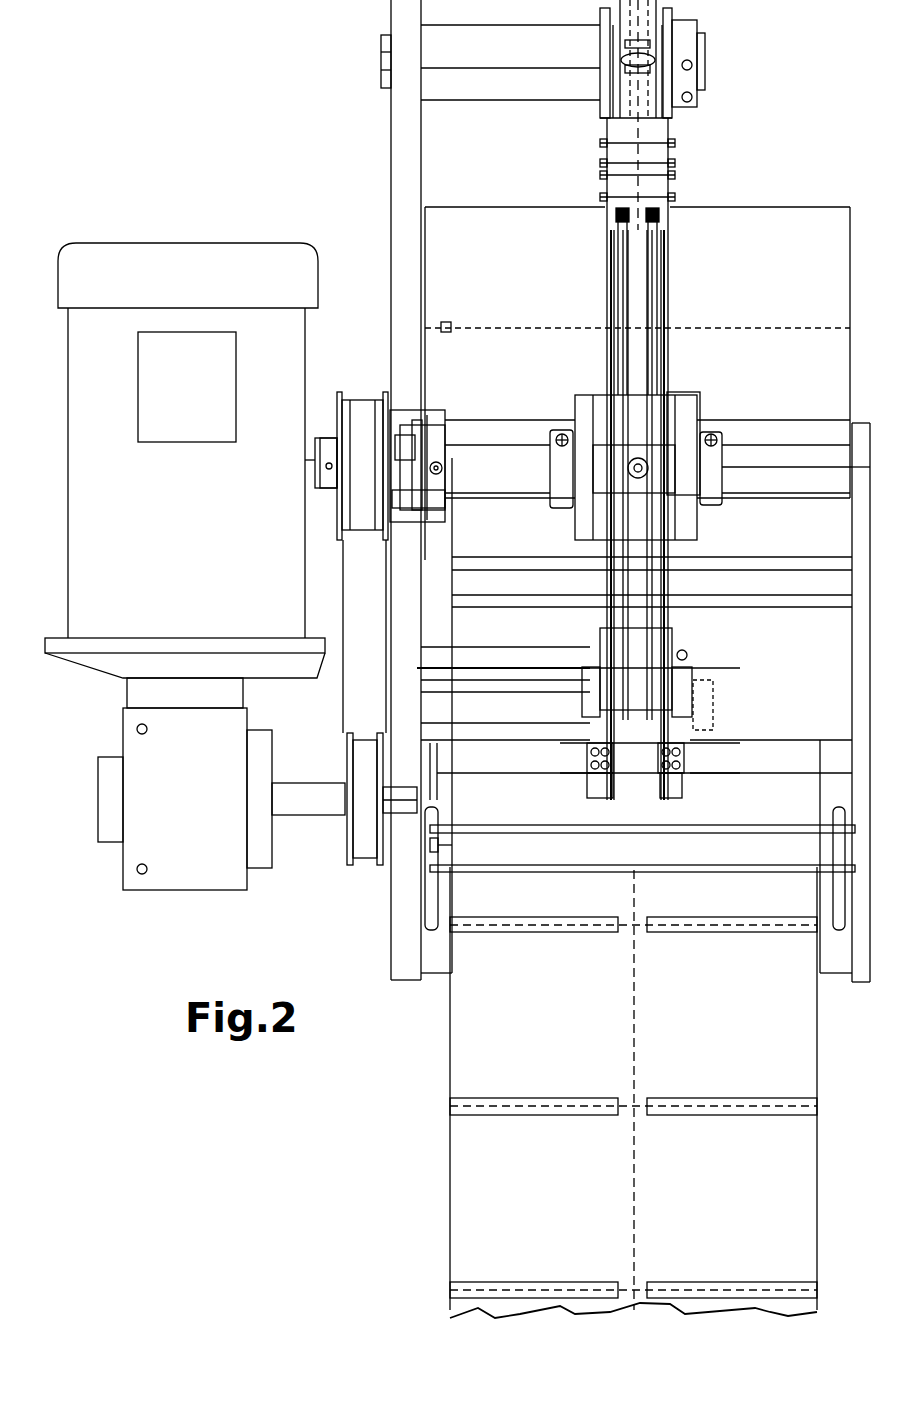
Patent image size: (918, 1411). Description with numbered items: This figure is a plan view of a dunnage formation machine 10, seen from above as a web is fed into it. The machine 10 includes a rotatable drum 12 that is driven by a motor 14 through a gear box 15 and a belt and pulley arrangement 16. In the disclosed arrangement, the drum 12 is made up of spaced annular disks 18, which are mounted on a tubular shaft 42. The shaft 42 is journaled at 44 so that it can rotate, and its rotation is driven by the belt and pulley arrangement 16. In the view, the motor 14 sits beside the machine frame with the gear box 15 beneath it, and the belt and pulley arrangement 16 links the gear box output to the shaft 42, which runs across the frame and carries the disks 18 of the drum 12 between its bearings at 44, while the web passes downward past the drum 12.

The dunnage formation machine 10 is at (360, 965).
The rotatable drum 12 is at (588, 291).
The motor 14 is at (176, 570).
The gear box 15 is at (197, 802).
The belt and pulley arrangement 16 is at (334, 690).
The annular disks 18 is at (612, 237).
The tubular shaft 42 is at (495, 466).
The journal 44 is at (410, 415).